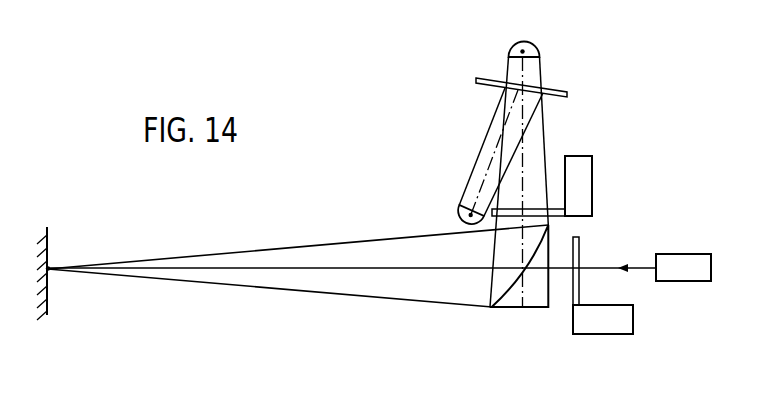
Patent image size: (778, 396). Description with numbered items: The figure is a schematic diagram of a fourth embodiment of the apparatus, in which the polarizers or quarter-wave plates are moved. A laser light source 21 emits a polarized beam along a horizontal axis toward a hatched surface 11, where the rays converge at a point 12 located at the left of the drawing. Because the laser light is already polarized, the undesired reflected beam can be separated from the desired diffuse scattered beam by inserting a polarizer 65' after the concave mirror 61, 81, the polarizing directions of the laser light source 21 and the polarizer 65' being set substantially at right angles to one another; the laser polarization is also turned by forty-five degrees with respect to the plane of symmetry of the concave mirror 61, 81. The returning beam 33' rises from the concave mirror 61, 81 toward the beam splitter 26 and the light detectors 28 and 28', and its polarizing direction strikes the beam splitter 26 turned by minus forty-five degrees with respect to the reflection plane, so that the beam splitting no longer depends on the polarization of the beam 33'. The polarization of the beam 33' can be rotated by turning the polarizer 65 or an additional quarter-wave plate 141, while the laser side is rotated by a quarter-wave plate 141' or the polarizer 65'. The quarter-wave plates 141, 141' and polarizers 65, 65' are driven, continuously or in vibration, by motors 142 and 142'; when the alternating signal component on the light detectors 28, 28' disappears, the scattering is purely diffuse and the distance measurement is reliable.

The workpiece / target surface 11 is at (46, 233).
The focal point on workpiece 12 is at (49, 268).
The laser light source 21 is at (703, 269).
The beam splitter 26 is at (488, 77).
The light detector 28 is at (550, 46).
The light detector 28' is at (446, 213).
The reflected beam 33' is at (525, 182).
The concave mirror 61 is at (487, 294).
The concave mirror 81 is at (505, 306).
The polarizer 65 is at (544, 300).
The quarter-wave plate 141 is at (544, 300).
The polarizer 65' is at (578, 227).
The quarter-wave plate 141' is at (578, 227).
The motor 142 is at (634, 319).
The motor 142' is at (611, 185).